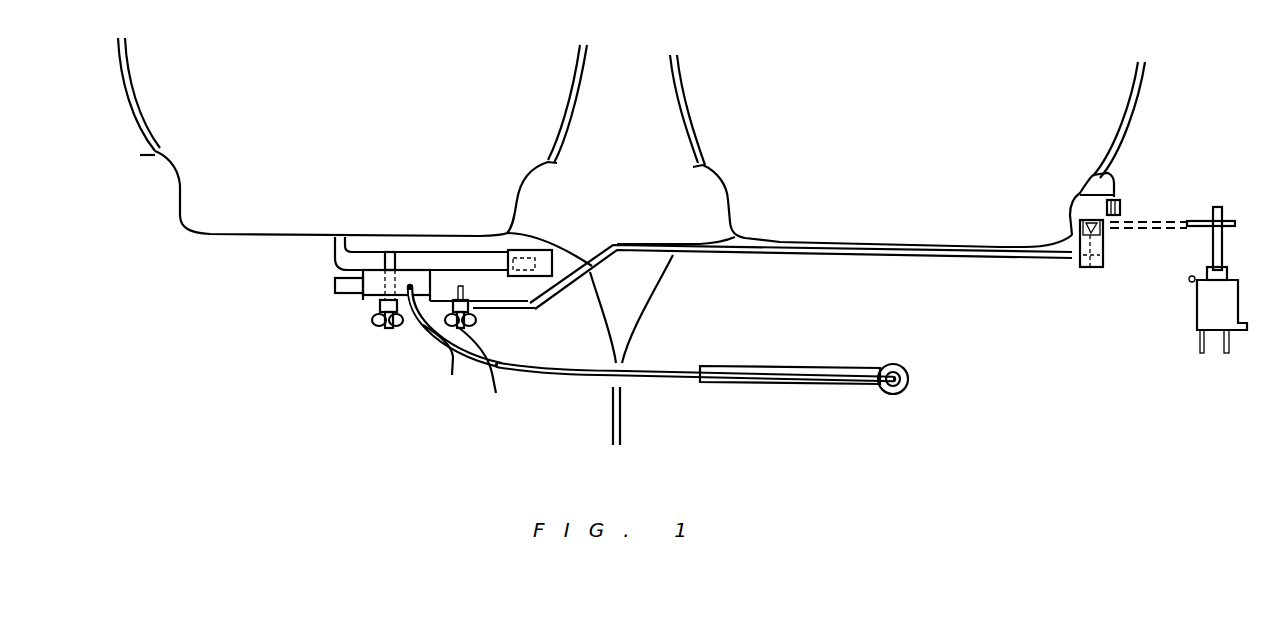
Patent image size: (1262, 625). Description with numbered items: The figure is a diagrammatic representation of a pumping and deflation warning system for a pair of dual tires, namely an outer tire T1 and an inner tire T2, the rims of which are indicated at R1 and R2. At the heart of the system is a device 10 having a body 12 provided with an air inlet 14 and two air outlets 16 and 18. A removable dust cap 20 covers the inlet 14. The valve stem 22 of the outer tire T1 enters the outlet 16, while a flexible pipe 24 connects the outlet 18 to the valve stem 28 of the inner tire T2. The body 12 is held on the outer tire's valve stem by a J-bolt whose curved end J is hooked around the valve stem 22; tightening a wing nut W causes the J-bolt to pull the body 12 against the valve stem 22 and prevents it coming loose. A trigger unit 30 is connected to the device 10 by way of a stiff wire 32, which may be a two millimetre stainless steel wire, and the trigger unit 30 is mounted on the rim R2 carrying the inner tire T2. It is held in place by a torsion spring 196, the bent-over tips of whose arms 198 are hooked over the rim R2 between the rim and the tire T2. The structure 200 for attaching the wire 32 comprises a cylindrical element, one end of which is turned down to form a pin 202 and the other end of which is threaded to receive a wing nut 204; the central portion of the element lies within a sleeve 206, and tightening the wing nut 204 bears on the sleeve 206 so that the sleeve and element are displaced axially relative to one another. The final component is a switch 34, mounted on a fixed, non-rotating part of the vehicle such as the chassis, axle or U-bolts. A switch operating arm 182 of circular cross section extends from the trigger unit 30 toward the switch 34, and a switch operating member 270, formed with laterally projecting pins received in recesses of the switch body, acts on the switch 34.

The outer tire T1 is at (128, 68).
The inner tire T2 is at (683, 100).
The first tank rim R1 is at (528, 177).
The rim R2 is at (1080, 193).
The J-bolt curved end J is at (390, 250).
The wing nut W is at (387, 335).
The device 10 is at (436, 314).
The body 12 is at (363, 302).
The air inlet 14 is at (362, 294).
The air outlet 16 is at (545, 272).
The air outlet 18 is at (423, 330).
The removable dust cap 20 is at (333, 282).
The valve stem 22 is at (408, 240).
The flexible pipe 24 is at (651, 351).
The valve stem 28 is at (755, 368).
The trigger unit 30 is at (1090, 273).
The stiff wire 32 is at (870, 257).
The switch 34 is at (1190, 308).
The switch operating arm 182 is at (1187, 226).
The torsion spring 196 is at (1118, 188).
The spring arms 198 is at (1110, 173).
The wire attaching structure 200 is at (480, 316).
The pin 202 is at (490, 297).
The wing nut 204 is at (498, 372).
The sleeve 206 is at (447, 361).
The switch operating member 270 is at (1213, 250).